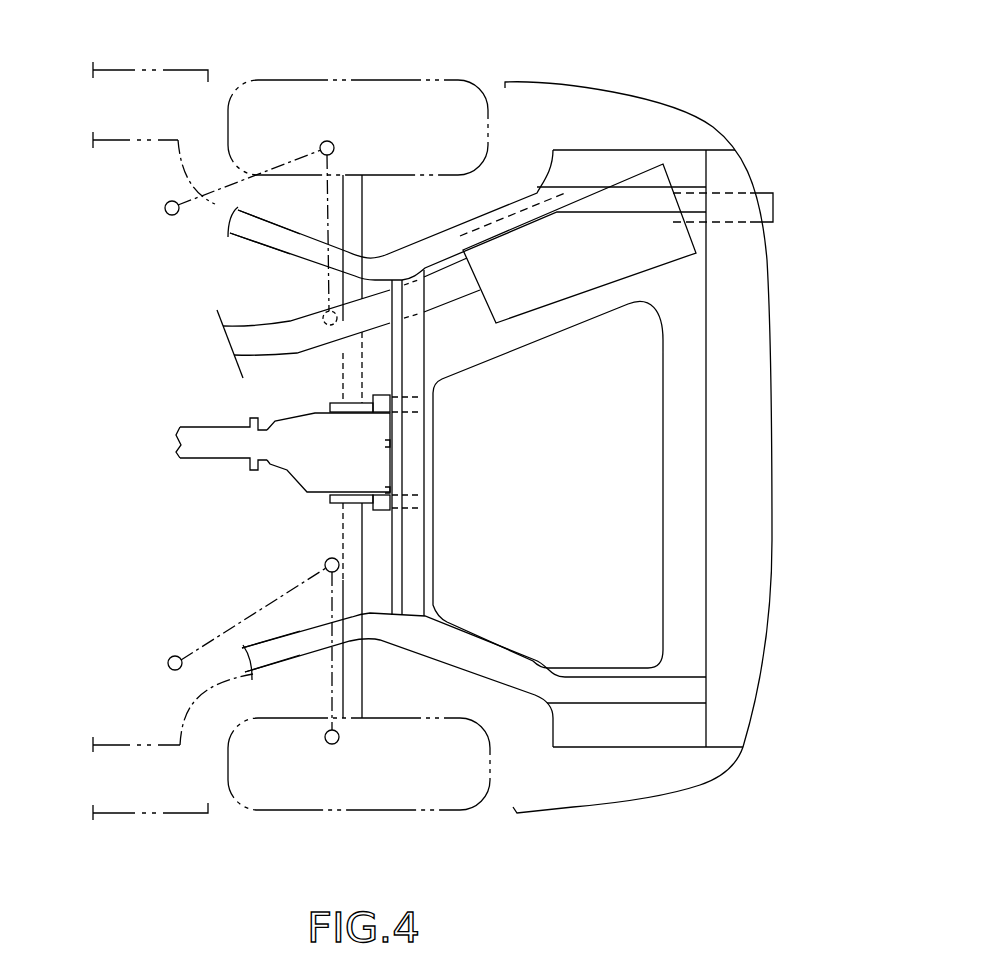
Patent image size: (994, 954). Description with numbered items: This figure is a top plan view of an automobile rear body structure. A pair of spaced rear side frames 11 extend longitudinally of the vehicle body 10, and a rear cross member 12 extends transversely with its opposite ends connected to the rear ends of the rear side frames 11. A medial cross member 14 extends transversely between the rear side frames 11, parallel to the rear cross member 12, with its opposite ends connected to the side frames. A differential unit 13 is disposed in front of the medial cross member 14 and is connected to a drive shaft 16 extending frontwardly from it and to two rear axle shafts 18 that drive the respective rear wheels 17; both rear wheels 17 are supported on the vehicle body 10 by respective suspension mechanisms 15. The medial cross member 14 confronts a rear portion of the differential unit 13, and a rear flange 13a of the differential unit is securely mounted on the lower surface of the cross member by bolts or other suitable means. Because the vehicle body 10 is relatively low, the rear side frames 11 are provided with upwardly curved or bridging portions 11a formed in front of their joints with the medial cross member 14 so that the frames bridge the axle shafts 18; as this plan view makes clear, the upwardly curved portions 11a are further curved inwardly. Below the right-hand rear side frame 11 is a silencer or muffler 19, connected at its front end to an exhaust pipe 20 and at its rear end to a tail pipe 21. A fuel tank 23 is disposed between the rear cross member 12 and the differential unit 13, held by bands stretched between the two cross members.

The vehicle body 10 is at (556, 82).
The rear side frames 11 is at (535, 187).
The upwardly curved portions 11a is at (352, 267).
The rear cross member 12 is at (750, 493).
The differential unit 13 is at (318, 470).
The rear flange 13a is at (387, 390).
The medial cross member 14 is at (417, 523).
The suspension mechanisms 15 is at (218, 200).
The drive shaft 16 is at (200, 447).
The rear wheels 17 is at (432, 80).
The rear axle shafts 18 is at (366, 228).
The muffler 19 is at (660, 268).
The exhaust pipe 20 is at (243, 337).
The tail pipe 21 is at (775, 207).
The fuel tank 23 is at (653, 588).